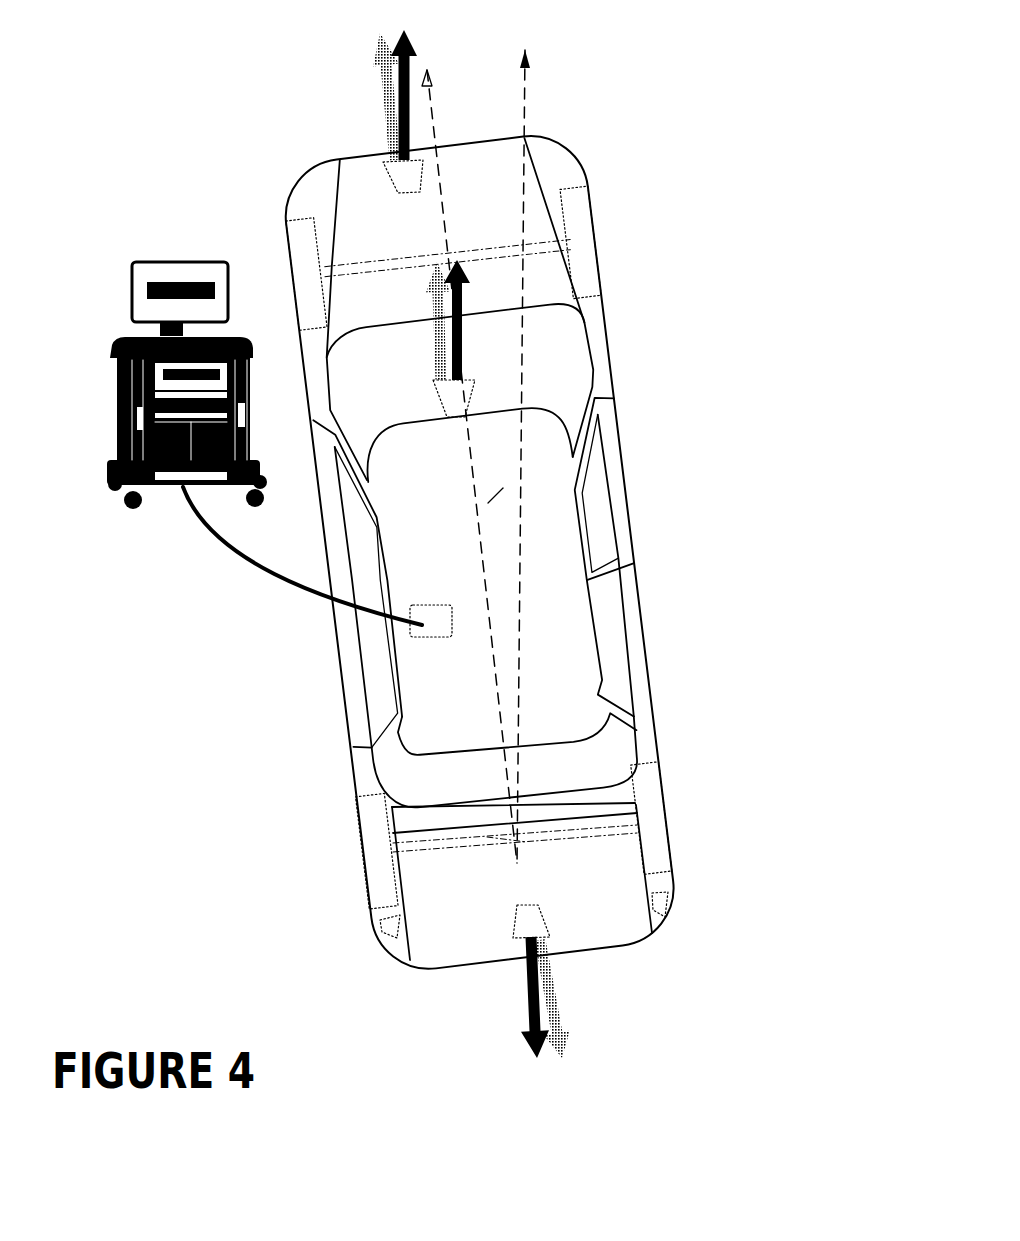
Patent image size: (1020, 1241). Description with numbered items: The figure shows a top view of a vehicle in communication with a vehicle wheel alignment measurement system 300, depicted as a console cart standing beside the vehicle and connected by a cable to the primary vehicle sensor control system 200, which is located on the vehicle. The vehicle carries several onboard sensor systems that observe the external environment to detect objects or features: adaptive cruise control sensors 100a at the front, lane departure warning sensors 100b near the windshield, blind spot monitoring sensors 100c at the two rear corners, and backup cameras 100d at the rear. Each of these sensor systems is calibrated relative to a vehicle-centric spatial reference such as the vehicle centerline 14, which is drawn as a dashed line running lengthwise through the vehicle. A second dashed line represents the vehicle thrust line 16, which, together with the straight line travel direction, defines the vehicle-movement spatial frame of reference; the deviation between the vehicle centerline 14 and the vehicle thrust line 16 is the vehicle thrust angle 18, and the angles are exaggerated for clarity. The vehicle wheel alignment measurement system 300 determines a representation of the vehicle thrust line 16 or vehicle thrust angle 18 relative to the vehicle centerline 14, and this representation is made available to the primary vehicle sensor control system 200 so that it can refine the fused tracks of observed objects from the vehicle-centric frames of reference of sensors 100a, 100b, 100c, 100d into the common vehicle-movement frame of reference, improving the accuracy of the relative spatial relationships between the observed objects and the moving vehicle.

The vehicle centerline 14 is at (490, 554).
The vehicle thrust line 16 is at (527, 106).
The vehicle thrust angle 18 is at (493, 498).
The adaptive cruise control (ACC) sensors 100a is at (390, 178).
The lane departure warning (LDW) sensors 100b is at (463, 400).
The blind spot monitoring sensors 100c is at (395, 928).
The backup cameras 100d is at (513, 928).
The primary vehicle sensor control system 200 is at (395, 643).
The vehicle wheel alignment measurement system 300 is at (173, 250).